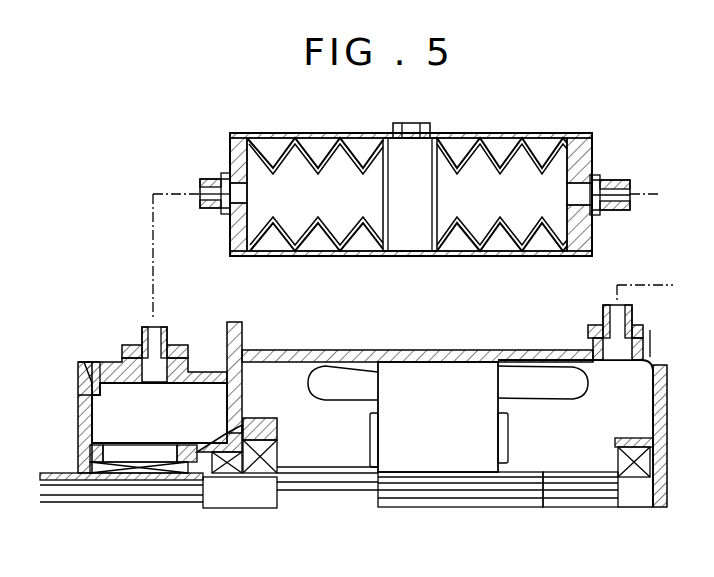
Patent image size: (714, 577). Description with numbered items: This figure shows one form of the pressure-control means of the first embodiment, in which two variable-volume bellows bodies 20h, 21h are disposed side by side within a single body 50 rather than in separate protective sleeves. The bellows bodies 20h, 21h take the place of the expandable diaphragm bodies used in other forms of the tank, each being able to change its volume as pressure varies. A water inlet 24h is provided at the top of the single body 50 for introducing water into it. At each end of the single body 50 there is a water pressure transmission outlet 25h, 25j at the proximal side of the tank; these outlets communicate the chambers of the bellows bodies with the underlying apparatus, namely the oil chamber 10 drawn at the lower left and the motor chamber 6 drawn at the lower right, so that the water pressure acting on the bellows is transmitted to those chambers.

The single body 50 is at (375, 257).
The water inlet 24h is at (410, 128).
The bellows body 21h is at (322, 155).
The bellows body 20h is at (507, 150).
The water pressure transmission outlet 25h is at (207, 193).
The water pressure transmission outlet 25j is at (620, 197).
The oil chamber 10 is at (178, 414).
The motor chamber 6 is at (611, 418).